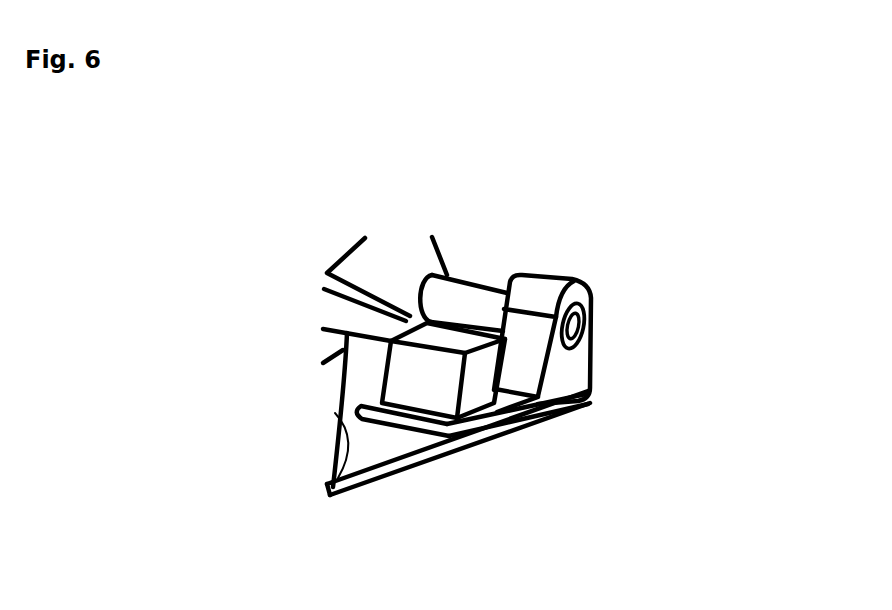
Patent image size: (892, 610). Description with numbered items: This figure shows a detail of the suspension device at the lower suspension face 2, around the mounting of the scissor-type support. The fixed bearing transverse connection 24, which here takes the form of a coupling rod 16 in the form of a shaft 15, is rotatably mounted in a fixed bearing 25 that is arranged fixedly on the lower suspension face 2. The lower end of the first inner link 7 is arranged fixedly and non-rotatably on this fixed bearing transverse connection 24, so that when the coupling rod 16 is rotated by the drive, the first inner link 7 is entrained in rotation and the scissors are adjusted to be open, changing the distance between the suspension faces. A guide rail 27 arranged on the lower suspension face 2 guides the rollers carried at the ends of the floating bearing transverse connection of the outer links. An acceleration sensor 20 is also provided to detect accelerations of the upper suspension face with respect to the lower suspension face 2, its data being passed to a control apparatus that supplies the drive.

The lower suspension face 2 is at (385, 467).
The first inner link 7 is at (390, 258).
The shaft 15 is at (588, 264).
The coupling rod 16 is at (480, 297).
The acceleration sensor 20 is at (429, 377).
The fixed bearing transverse connection 24 is at (588, 264).
The fixed bearing 25 is at (573, 370).
The guide rail 27 is at (333, 487).